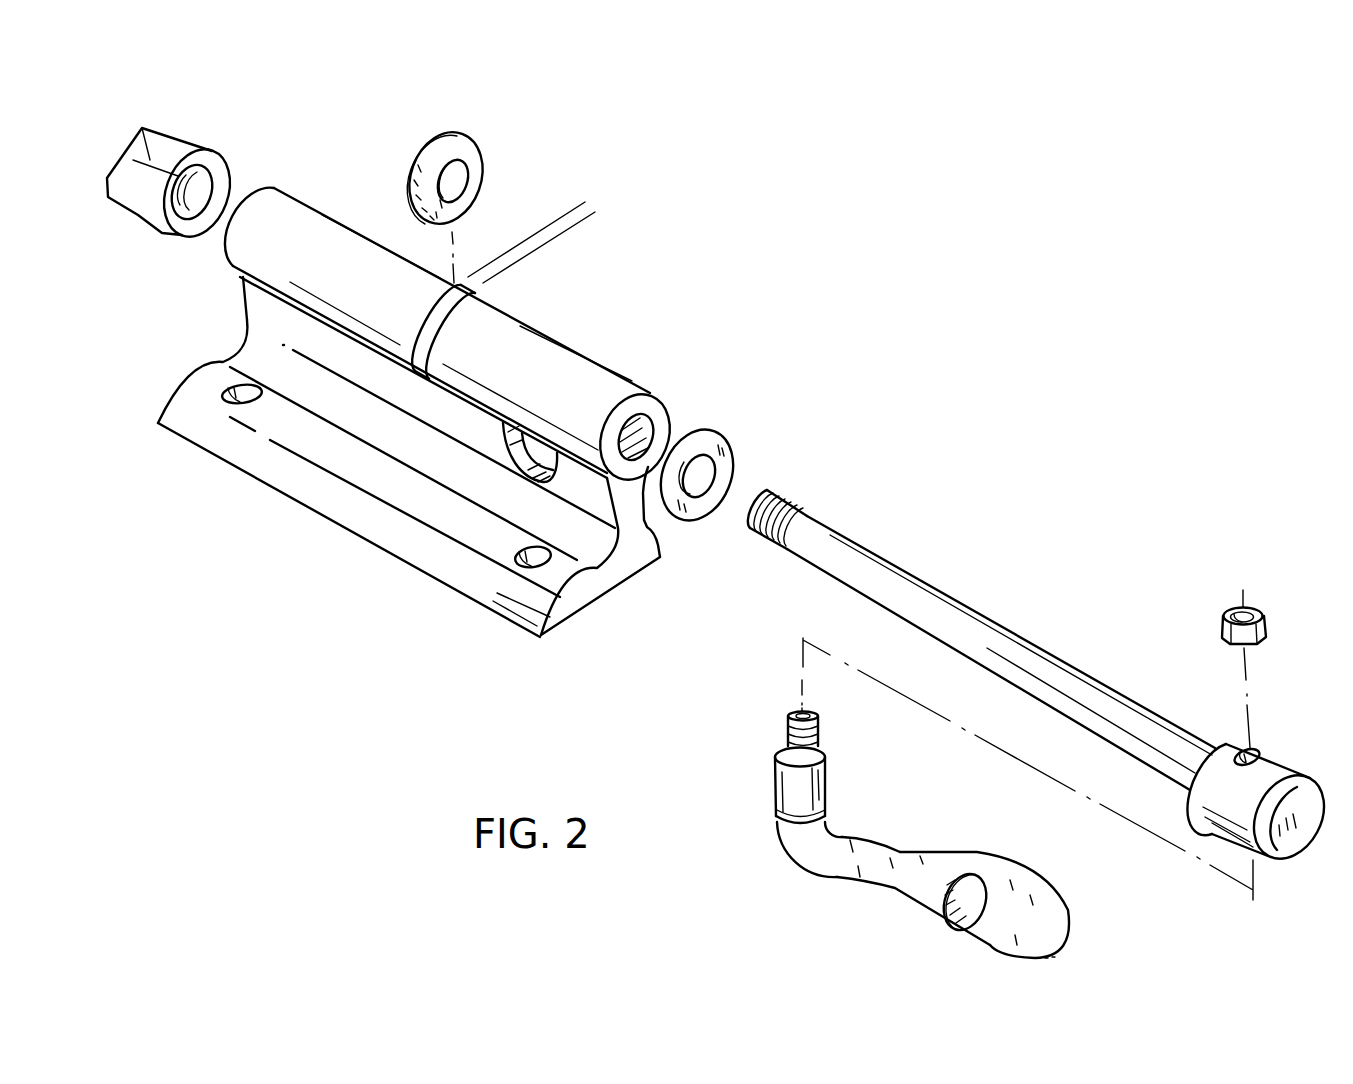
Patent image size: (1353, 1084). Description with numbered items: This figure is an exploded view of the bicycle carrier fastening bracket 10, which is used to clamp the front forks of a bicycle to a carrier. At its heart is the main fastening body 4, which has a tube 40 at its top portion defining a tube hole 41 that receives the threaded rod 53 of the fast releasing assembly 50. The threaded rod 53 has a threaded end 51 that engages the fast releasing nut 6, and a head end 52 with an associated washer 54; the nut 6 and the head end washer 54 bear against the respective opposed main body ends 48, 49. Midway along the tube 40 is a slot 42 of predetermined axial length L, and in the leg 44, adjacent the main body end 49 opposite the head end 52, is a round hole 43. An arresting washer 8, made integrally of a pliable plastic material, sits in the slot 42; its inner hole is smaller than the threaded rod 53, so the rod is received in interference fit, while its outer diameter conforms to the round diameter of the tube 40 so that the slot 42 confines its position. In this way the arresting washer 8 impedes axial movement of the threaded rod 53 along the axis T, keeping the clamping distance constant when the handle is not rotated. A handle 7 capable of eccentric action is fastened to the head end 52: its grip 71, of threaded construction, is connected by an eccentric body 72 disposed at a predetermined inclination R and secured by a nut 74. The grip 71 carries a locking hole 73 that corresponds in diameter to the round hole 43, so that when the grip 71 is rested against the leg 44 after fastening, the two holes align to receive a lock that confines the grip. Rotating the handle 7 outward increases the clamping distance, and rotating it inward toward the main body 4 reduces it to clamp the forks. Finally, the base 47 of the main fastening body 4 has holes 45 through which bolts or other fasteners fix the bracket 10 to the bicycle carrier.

The main fastening body 4 is at (330, 492).
The fast releasing nut 6 is at (134, 200).
The handle 7 is at (763, 823).
The arresting washer 8 is at (478, 168).
The bicycle carrier fastening bracket 10 is at (428, 698).
The tube 40 is at (552, 358).
The tube hole 41 is at (645, 434).
The slot 42 is at (420, 330).
The round hole 43 is at (522, 460).
The leg 44 is at (608, 507).
The holes 45 is at (230, 388).
The base 47 is at (243, 455).
The main body end 48 is at (244, 195).
The main body end 49 is at (652, 408).
The bolt assembly 50 is at (1060, 600).
The threaded end 51 is at (780, 551).
The head end 52 is at (1272, 763).
The threaded rod 53 is at (945, 614).
The washer 54 is at (730, 444).
The grip 71 is at (1042, 898).
The eccentric body 72 is at (824, 767).
The locking hole 73 is at (954, 910).
The nut 74 is at (1258, 608).
The axial length L is at (513, 203).
The axis T is at (740, 495).
The inclination R is at (807, 868).